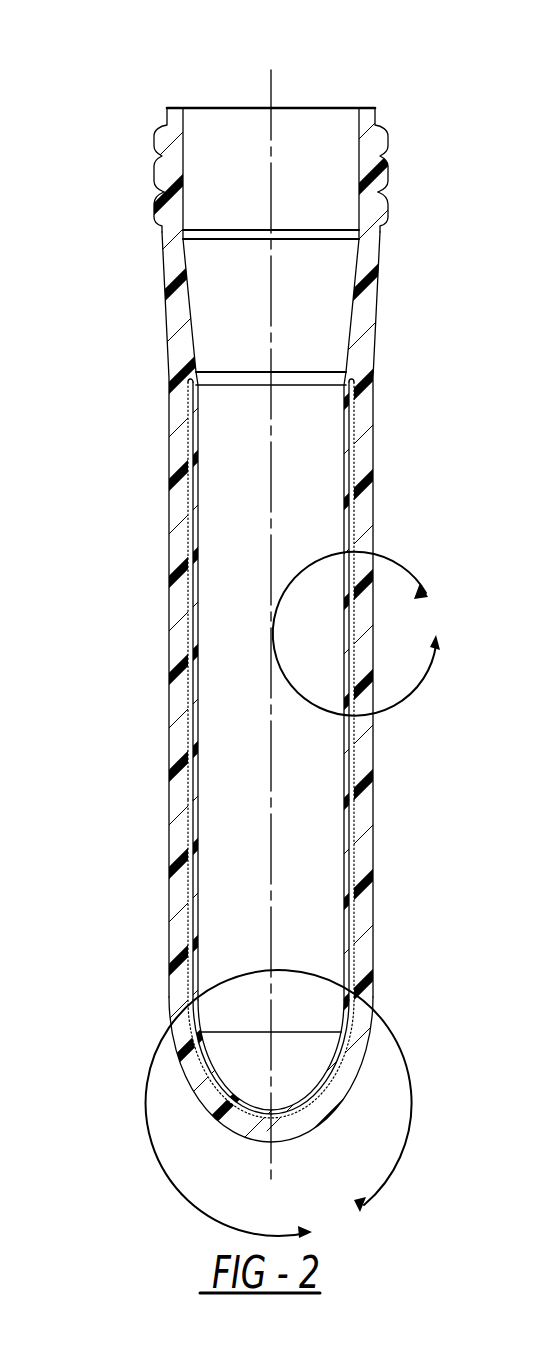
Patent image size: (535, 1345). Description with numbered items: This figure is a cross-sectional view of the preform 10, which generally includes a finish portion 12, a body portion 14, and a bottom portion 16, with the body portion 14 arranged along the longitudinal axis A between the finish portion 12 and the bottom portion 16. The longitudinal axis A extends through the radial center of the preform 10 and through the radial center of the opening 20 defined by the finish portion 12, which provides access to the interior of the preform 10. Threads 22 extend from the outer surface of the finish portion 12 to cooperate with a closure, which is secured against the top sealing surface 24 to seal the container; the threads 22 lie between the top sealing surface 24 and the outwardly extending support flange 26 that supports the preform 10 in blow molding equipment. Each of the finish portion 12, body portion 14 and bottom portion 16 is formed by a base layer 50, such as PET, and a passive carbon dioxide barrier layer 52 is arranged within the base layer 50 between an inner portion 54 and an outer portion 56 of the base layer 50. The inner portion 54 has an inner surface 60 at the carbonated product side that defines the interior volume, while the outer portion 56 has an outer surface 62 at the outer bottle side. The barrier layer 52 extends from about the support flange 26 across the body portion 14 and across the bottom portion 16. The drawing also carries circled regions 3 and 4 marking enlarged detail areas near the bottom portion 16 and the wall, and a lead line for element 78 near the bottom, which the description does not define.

The preform 10 is at (126, 40).
The finish portion 12 is at (166, 143).
The body portion 14 is at (169, 413).
The bottom portion 16 is at (192, 1093).
The opening 20 is at (309, 107).
The threads 22 is at (164, 160).
The top sealing surface 24 is at (174, 107).
The support flange 26 is at (159, 218).
The base layer 50 is at (160, 469).
The passive carbon dioxide barrier layer 52 is at (189, 441).
The inner portion 54 is at (199, 522).
The outer portion 56 is at (171, 525).
The inner surface 60 is at (200, 832).
The outer surface 62 is at (171, 856).
The bottom of insert 78 is at (289, 1119).
The longitudinal axis A is at (270, 83).
The detail view circle 3 is at (279, 1110).
The detail view circle 4 is at (369, 634).